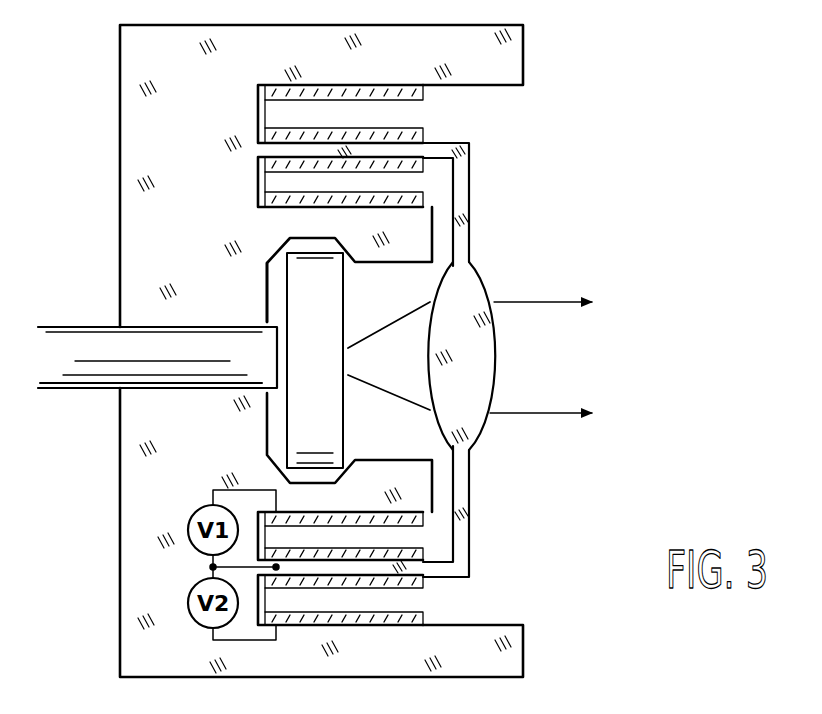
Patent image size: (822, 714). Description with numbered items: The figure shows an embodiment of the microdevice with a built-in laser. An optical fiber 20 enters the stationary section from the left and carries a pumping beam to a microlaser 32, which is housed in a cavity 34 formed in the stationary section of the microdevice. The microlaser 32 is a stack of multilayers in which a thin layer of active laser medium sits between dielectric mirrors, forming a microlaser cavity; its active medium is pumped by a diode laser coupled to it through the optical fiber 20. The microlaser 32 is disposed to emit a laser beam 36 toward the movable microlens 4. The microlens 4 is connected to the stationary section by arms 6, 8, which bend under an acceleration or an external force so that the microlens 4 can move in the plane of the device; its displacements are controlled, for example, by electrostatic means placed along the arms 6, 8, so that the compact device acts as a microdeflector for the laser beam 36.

The movable microlens 4 is at (470, 285).
The arm 6 is at (462, 190).
The arm 8 is at (462, 487).
The optical fiber 20 is at (90, 333).
The microlaser 32 is at (337, 292).
The cavity 34 is at (275, 302).
The laser beam 36 is at (390, 385).